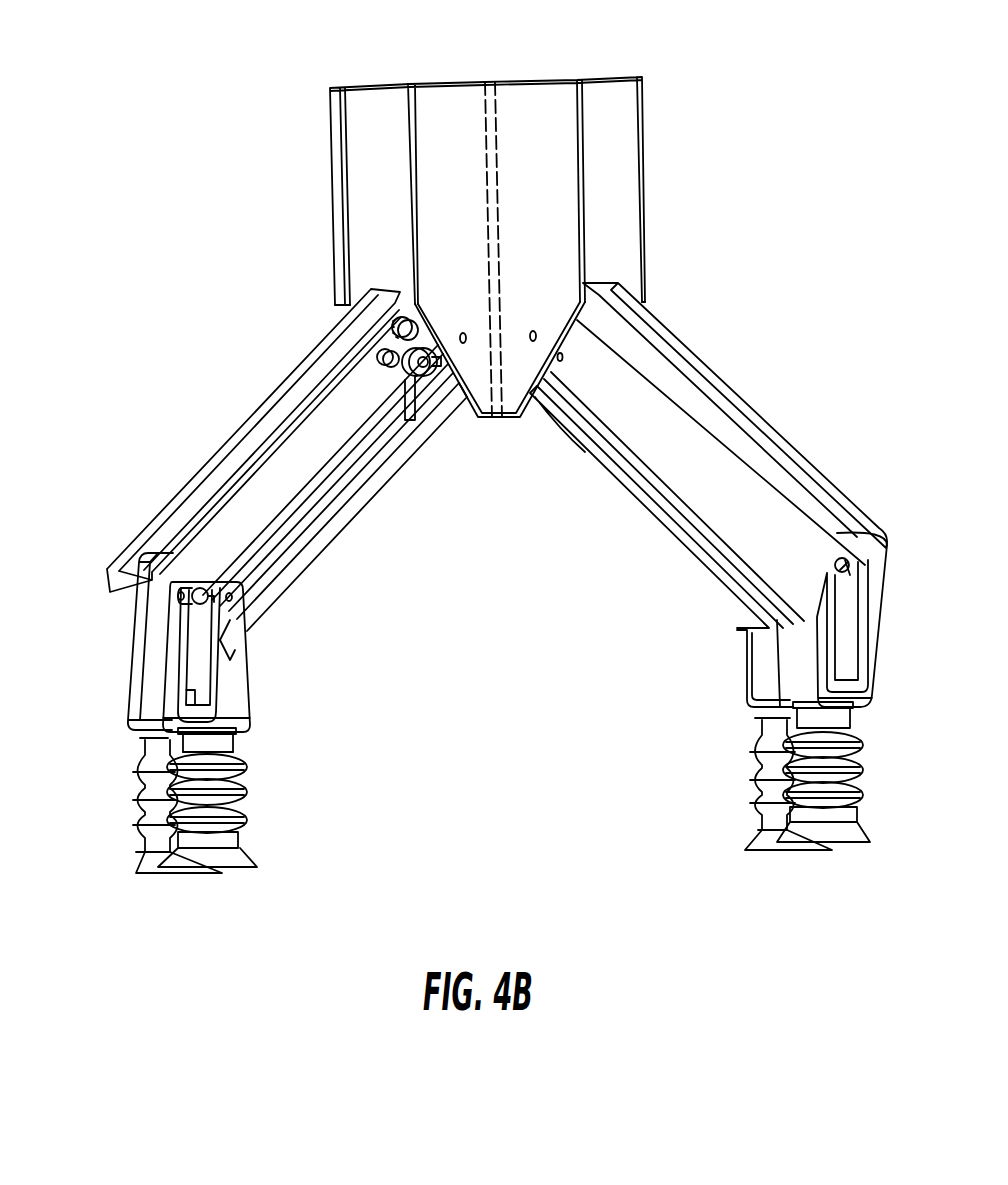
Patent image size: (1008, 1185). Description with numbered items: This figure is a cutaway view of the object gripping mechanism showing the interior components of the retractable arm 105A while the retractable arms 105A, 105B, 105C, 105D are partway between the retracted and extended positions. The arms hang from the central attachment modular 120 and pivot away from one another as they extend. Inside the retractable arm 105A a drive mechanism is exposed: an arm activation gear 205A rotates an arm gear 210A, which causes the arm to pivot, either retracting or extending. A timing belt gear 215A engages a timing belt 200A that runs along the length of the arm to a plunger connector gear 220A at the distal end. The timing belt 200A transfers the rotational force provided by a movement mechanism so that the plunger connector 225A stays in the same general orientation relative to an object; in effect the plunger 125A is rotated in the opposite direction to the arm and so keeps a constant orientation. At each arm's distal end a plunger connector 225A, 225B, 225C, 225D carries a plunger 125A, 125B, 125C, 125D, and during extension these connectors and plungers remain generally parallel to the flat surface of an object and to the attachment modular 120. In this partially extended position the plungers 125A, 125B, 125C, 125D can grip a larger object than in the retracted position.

The attachment modular 120 is at (530, 112).
The retractable arm 105A is at (312, 563).
The retractable arm 105B is at (712, 590).
The retractable arm 105C is at (232, 432).
The retractable arm 105D is at (630, 505).
The timing belt 200A is at (345, 478).
The arm activation gear 205A is at (400, 324).
The arm gear 210A is at (384, 357).
The timing belt gear 215A is at (423, 366).
The plunger connector gear 220A is at (210, 598).
The plunger connector 225A is at (228, 680).
The plunger connector 225B is at (772, 700).
The plunger connector 225C is at (135, 700).
The plunger connector 225D is at (790, 698).
The plunger 125A is at (215, 795).
The plunger 125B is at (825, 807).
The plunger 125C is at (165, 833).
The plunger 125D is at (766, 833).